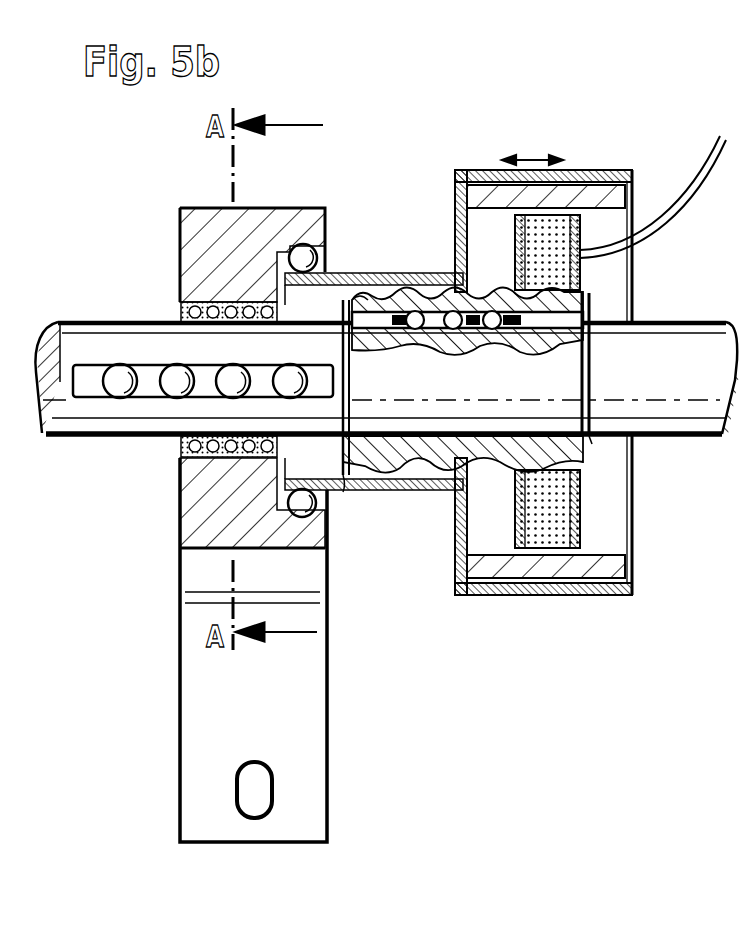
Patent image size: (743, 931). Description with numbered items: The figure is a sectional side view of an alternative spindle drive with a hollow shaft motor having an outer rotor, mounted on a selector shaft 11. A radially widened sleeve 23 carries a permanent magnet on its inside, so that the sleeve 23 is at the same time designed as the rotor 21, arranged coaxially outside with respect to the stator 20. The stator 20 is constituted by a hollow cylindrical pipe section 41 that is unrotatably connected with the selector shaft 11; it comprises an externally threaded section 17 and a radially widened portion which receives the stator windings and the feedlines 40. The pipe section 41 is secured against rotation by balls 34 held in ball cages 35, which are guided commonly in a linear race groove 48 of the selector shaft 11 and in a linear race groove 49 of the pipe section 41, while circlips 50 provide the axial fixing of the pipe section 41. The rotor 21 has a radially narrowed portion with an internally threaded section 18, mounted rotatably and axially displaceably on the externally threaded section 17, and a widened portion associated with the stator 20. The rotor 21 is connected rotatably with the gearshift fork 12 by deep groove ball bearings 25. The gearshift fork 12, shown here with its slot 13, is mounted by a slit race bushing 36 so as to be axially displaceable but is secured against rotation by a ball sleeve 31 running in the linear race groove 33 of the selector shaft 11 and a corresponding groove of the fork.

The selector shaft 11 is at (690, 420).
The gearshift fork 12 is at (212, 690).
The mounting slot 13 is at (252, 790).
The externally threaded section 17 is at (365, 298).
The internally threaded section 18 is at (431, 300).
The stator 20 is at (580, 527).
The rotor 21 is at (574, 187).
The sleeve 23 is at (490, 170).
The deep groove ball bearings 25 is at (302, 244).
The ball sleeve 31 is at (123, 386).
The linear race groove 33 is at (90, 384).
The balls 34 is at (458, 326).
The ball cages 35 is at (523, 342).
The race bushing 36 is at (208, 305).
The feedlines 40 is at (710, 160).
The pipe section 41 is at (633, 310).
The linear race groove 48 is at (432, 328).
The linear race groove 49 is at (377, 300).
The circlips 50 is at (346, 490).